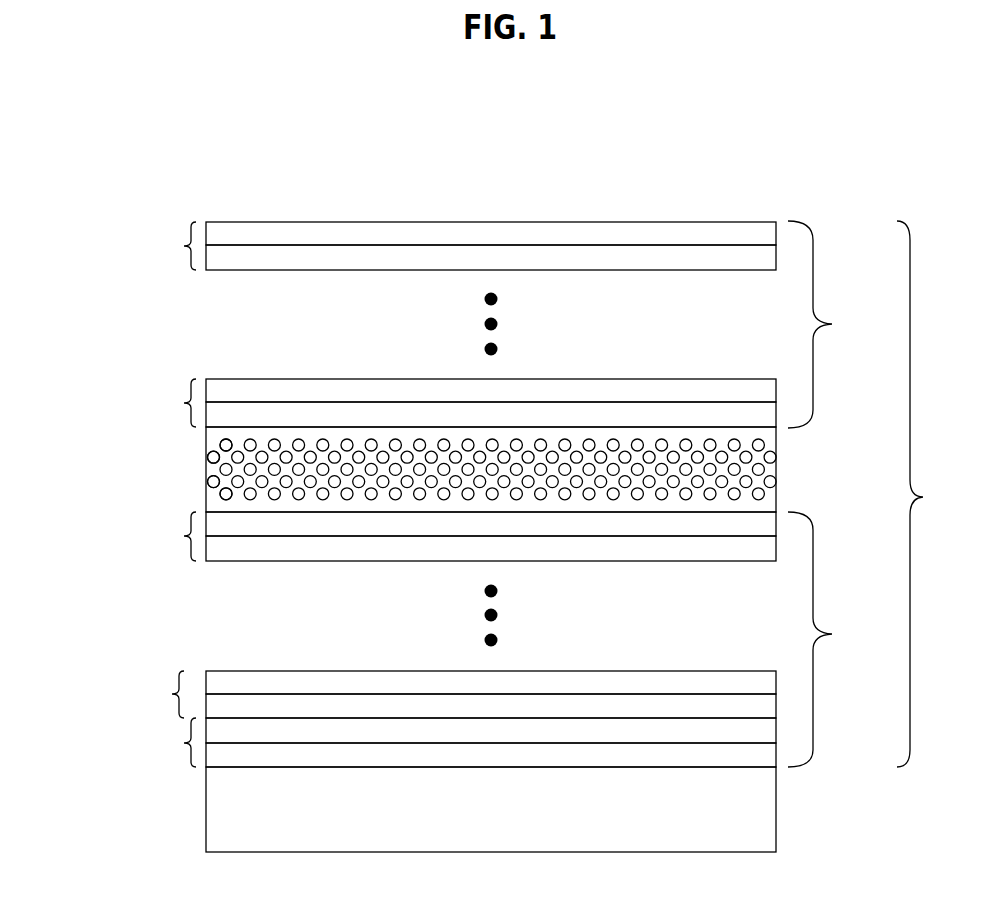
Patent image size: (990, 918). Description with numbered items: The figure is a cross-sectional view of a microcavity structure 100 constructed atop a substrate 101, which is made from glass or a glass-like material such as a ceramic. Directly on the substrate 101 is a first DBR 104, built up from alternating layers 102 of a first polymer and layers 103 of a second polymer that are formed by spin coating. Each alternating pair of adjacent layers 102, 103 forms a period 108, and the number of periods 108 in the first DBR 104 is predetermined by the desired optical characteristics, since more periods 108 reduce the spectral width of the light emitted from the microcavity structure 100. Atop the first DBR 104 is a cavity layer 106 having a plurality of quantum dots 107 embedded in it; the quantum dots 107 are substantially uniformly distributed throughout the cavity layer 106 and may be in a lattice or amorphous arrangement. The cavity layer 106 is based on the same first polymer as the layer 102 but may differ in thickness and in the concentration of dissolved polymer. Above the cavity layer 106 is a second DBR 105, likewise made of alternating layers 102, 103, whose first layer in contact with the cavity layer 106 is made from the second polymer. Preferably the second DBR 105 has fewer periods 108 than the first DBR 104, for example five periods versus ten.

The microcavity structure 100 is at (932, 494).
The substrate 101 is at (761, 838).
The layer of a first polymer 102 is at (763, 244).
The layer of a second polymer 103 is at (702, 268).
The first DBR 104 is at (836, 639).
The second DBR 105 is at (836, 324).
The cavity layer 106 is at (776, 470).
The quantum dots 107 is at (221, 441).
The period 108 is at (160, 494).